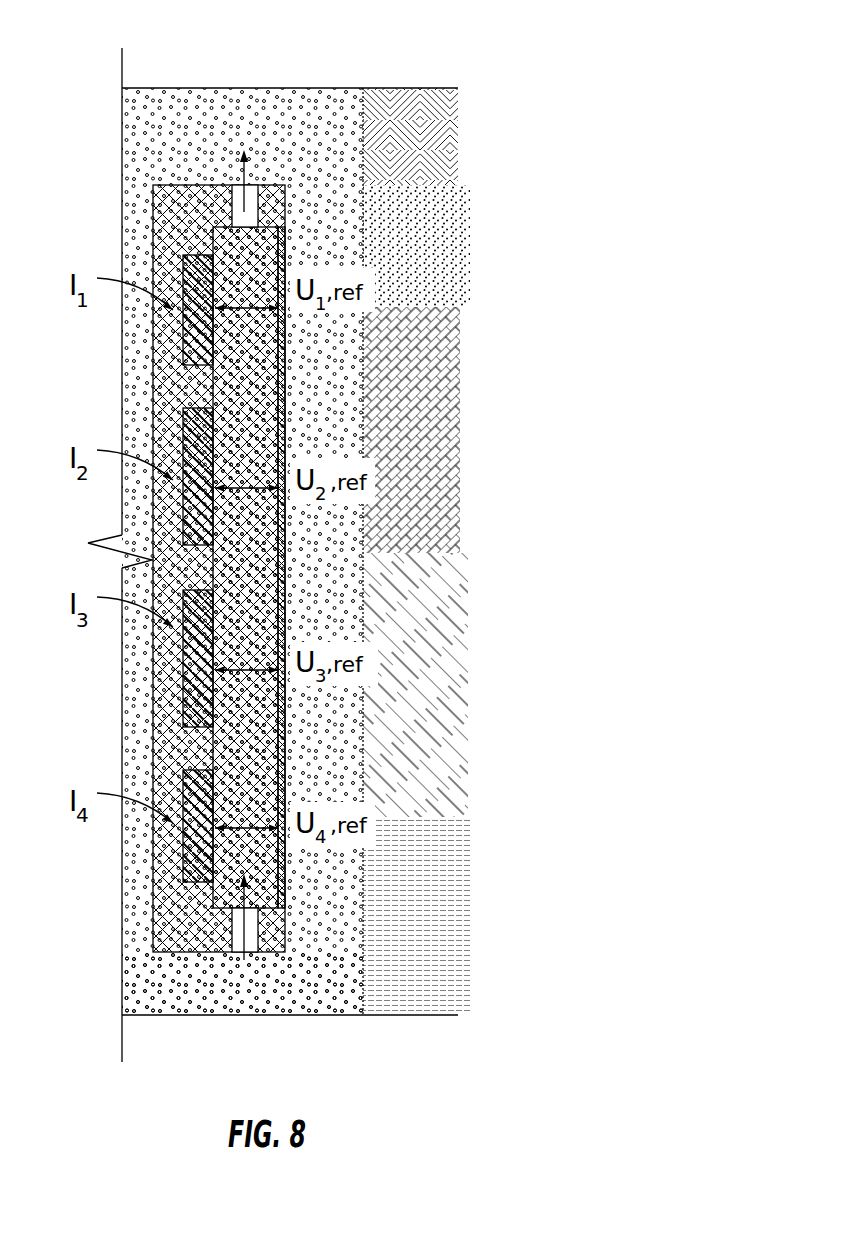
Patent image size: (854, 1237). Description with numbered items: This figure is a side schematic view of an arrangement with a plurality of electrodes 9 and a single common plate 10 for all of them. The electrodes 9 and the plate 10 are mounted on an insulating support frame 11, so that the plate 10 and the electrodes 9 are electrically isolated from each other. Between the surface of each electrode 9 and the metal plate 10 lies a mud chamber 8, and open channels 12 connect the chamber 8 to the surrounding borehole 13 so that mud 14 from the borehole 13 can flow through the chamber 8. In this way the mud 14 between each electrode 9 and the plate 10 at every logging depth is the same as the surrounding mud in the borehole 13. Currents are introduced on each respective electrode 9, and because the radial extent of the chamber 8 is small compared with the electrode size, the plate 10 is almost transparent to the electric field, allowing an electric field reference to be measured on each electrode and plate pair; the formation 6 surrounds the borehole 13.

The borehole 13 is at (168, 60).
The formation 6 is at (422, 61).
The mud 14 is at (148, 987).
The insulating support frame 11 is at (158, 237).
The mud chamber 8 is at (257, 467).
The plate 10 is at (287, 243).
The electrode 9 is at (173, 445).
The open channels 12 is at (247, 200).